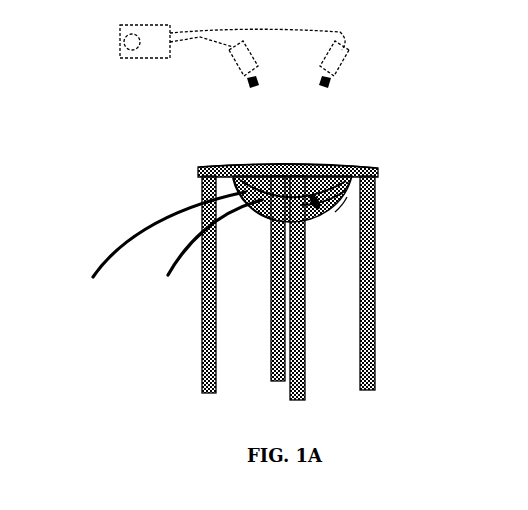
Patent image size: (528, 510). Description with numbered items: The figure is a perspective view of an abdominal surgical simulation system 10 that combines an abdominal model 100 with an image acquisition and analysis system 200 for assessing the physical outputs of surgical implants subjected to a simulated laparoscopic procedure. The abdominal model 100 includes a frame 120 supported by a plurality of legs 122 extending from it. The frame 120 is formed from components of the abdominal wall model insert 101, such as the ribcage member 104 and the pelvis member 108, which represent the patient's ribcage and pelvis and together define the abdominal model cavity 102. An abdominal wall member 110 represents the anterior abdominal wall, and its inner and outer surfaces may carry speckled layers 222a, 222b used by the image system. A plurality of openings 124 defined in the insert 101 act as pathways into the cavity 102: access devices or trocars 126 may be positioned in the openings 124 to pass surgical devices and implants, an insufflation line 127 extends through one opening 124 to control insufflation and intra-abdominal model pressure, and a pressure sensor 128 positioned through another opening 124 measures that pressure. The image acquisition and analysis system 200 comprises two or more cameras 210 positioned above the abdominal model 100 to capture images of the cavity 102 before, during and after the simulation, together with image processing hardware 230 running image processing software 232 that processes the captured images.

The abdominal surgical simulation system 10 is at (411, 71).
The abdominal model 100 is at (170, 160).
The abdominal wall model insert 101 is at (352, 183).
The abdominal model cavity 102 is at (287, 164).
The ribcage member 104 is at (303, 165).
The pelvis member 108 is at (270, 228).
The abdominal wall member 110 is at (346, 204).
The frame 120 is at (386, 160).
The legs 122 is at (376, 258).
The openings 124 is at (236, 190).
The access devices/trocars 126 is at (317, 203).
The insufflation line 127 is at (107, 244).
The pressure sensor 128 is at (178, 254).
The image acquisition and analysis system 200 is at (187, 83).
The cameras 210 is at (318, 60).
The speckled layer 222a is at (343, 197).
The speckled layer 222b is at (340, 213).
The image processing hardware 230 is at (145, 58).
The image processing software 232 is at (124, 46).